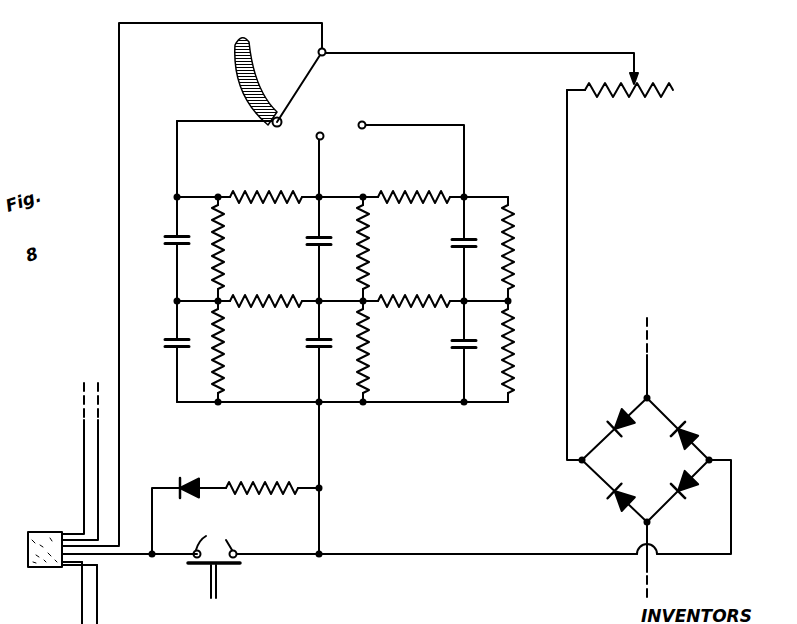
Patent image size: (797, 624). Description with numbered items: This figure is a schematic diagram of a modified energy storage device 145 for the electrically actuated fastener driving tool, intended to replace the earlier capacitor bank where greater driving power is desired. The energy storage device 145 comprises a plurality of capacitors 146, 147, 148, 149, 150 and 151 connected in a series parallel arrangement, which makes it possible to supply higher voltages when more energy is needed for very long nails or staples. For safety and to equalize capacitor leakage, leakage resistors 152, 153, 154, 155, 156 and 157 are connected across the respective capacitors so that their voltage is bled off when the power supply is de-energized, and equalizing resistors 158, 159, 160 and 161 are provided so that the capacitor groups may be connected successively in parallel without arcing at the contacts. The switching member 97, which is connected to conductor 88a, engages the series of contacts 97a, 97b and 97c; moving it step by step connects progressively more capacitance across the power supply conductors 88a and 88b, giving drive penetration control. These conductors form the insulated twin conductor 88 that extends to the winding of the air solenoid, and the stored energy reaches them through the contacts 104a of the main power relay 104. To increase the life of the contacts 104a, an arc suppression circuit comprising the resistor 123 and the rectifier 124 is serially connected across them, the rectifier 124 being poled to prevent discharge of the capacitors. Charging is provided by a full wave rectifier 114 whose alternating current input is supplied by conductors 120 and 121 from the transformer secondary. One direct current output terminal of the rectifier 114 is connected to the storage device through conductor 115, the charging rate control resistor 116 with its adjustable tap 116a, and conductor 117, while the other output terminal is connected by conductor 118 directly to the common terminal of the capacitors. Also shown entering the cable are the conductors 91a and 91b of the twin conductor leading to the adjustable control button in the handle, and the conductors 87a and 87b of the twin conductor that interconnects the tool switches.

The power supply conductor 88a is at (121, 90).
The power supply conductor 88b is at (120, 556).
The insulated twin conductor 88 is at (73, 549).
The switching member 97 is at (313, 70).
The contact 97a is at (275, 115).
The contact 97b is at (319, 131).
The contact 97c is at (362, 113).
The conductor 117 is at (471, 53).
The charging rate control resistor 116 is at (626, 98).
The adjustable tap 116a is at (638, 78).
The conductor 115 is at (568, 272).
The full wave rectifier 114 is at (652, 471).
The conductor 120 is at (648, 375).
The conductor 121 is at (648, 522).
The conductor 118 is at (439, 557).
The energy storage device 145 is at (268, 257).
The capacitor 146 is at (168, 232).
The capacitor 147 is at (308, 254).
The capacitor 148 is at (456, 250).
The capacitor 149 is at (170, 336).
The capacitor 150 is at (308, 354).
The capacitor 151 is at (454, 354).
The leakage resistor 152 is at (224, 244).
The leakage resistor 153 is at (368, 238).
The leakage resistor 154 is at (514, 254).
The leakage resistor 155 is at (220, 354).
The leakage resistor 156 is at (368, 354).
The leakage resistor 157 is at (513, 350).
The equalizing resistor 158 is at (289, 178).
The equalizing resistor 159 is at (415, 196).
The equalizing resistor 160 is at (285, 308).
The equalizing resistor 161 is at (402, 306).
The resistor 123 is at (250, 480).
The rectifier 124 is at (188, 478).
The main power relay 104 is at (220, 582).
The contacts 104a is at (221, 536).
The conductor 91a is at (82, 438).
The conductor 91b is at (98, 467).
The conductor 87a is at (109, 598).
The conductor 87b is at (77, 598).